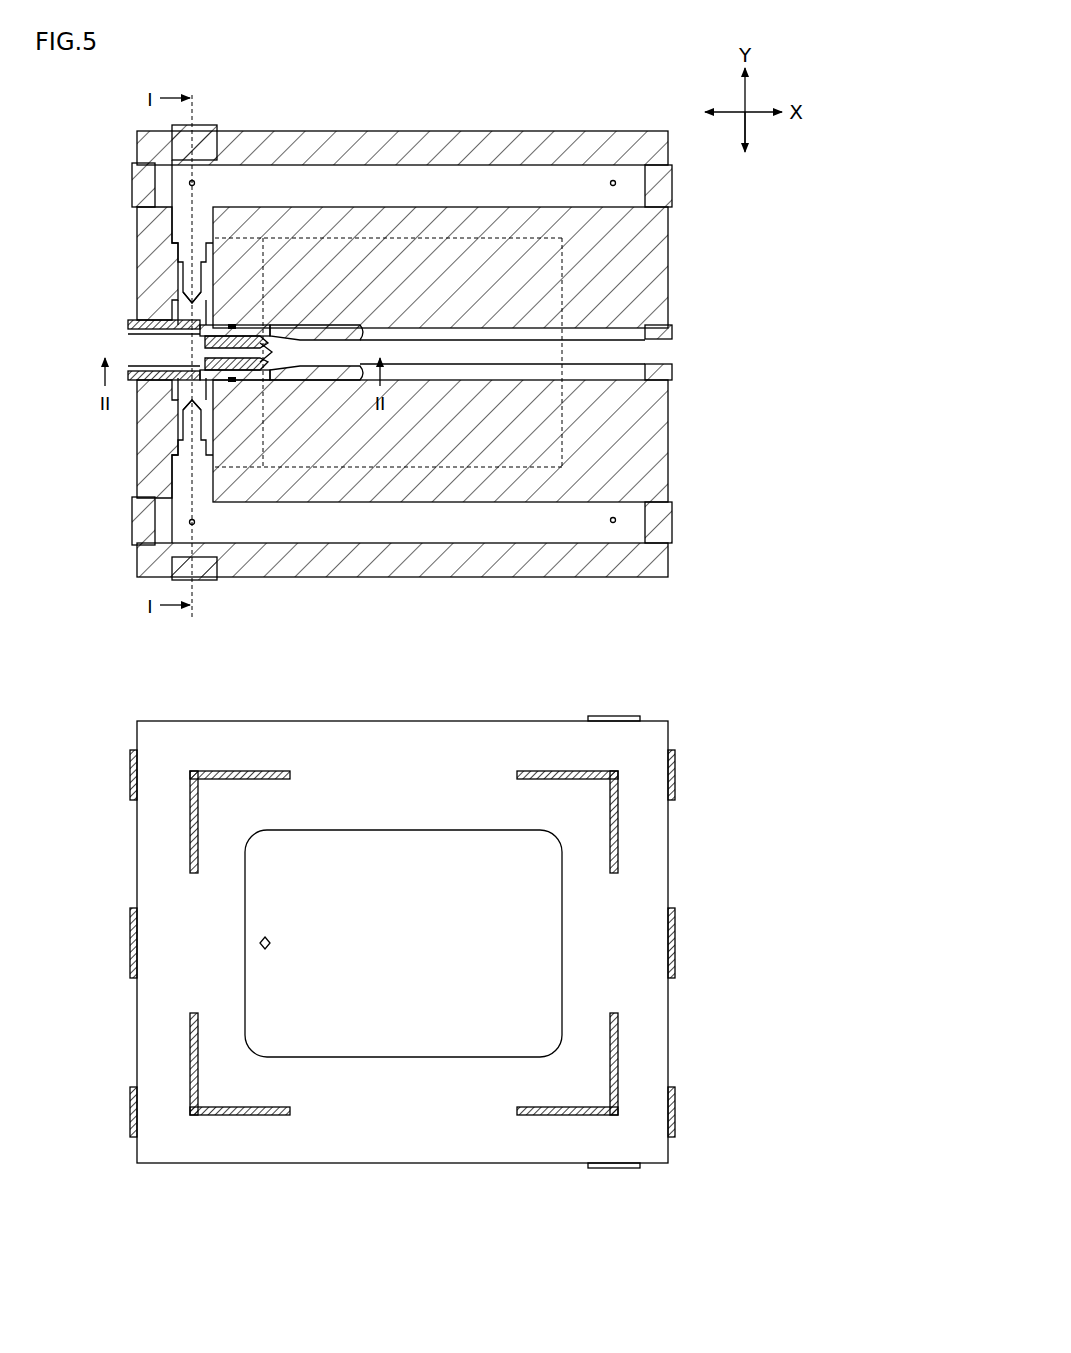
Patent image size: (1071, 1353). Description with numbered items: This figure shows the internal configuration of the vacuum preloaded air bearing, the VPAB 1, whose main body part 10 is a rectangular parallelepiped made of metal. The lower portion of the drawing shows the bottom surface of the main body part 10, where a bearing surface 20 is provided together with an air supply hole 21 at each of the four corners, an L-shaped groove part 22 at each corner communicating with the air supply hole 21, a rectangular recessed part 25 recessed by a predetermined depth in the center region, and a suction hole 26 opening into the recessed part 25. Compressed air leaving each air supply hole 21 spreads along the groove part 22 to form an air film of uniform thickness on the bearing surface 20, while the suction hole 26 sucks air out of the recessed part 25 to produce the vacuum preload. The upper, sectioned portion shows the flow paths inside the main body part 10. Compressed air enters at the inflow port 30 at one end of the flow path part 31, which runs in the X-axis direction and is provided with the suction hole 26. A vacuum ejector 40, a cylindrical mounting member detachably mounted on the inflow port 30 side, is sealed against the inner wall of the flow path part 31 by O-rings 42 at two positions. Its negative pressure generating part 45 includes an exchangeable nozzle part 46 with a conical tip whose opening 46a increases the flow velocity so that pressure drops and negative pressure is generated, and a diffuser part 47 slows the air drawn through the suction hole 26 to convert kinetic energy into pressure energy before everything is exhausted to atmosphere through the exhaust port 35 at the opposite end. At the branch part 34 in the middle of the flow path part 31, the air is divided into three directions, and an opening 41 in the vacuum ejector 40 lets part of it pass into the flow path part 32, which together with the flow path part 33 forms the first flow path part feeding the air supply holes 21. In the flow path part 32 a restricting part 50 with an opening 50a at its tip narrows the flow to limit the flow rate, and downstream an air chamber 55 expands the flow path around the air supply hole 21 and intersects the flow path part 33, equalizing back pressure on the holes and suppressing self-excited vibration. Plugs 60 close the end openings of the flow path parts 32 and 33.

The VPAB 1 is at (352, 118).
The main body part 10 is at (540, 131).
The bearing surface 20 is at (480, 748).
The air supply hole 21 is at (192, 183).
The groove part 22 is at (133, 832).
The recessed part 25 is at (482, 238).
The suction hole 26 is at (265, 938).
The inflow port 30 is at (200, 350).
The flow path part 31 is at (600, 328).
The flow path part 32 is at (145, 225).
The flow path part 33 is at (432, 160).
The branch part 34 is at (128, 324).
The exhaust port 35 is at (672, 350).
The vacuum ejector 40 is at (205, 340).
The opening 41 is at (205, 358).
The O-ring 42 is at (215, 325).
The negative pressure generating part 45 is at (272, 330).
The nozzle part 46 is at (205, 382).
The opening 46a is at (240, 325).
The diffuser part 47 is at (320, 328).
The restricting part 50 is at (175, 262).
The opening 50a is at (205, 265).
The air chamber 55 is at (137, 170).
The plug 60 is at (198, 128).